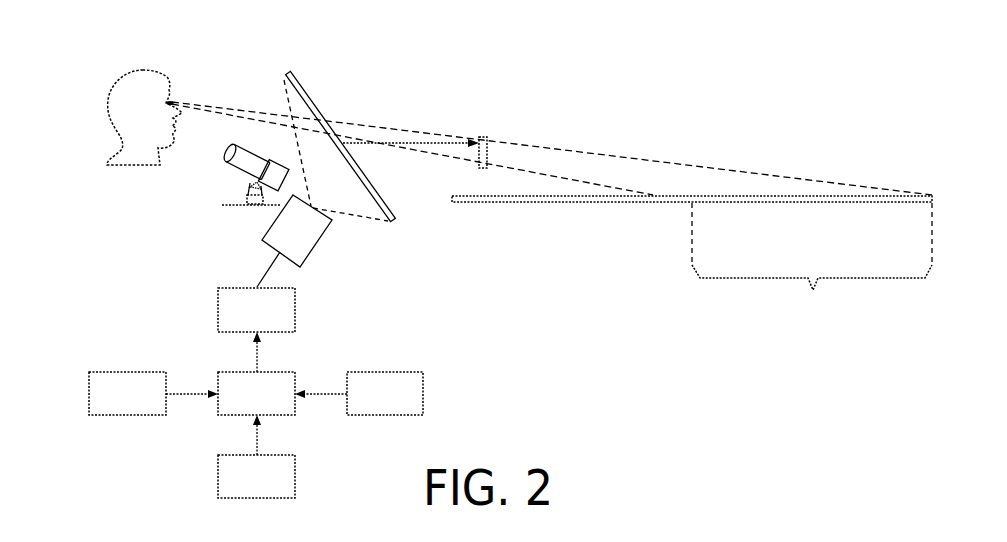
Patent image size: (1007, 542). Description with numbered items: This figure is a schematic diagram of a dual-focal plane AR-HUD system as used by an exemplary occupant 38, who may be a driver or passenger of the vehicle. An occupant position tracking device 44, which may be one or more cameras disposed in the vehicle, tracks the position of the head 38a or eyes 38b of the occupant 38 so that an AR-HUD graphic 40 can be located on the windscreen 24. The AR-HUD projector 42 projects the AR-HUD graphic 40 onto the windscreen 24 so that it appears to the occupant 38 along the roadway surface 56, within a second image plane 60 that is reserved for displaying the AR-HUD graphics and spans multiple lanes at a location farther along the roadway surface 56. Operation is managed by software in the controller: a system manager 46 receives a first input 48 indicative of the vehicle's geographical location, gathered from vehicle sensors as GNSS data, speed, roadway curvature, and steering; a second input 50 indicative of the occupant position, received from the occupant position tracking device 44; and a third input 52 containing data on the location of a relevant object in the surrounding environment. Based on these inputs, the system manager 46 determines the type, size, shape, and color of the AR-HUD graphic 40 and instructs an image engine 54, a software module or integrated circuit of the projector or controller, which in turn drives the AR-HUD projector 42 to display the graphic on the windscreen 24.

The occupant 38 is at (96, 66).
The head 38a is at (144, 70).
The eyes 38b is at (172, 100).
The windscreen 24 is at (300, 83).
The AR-HUD graphic 40 is at (483, 137).
The occupant position tracking device 44 is at (243, 190).
The AR-HUD projector 42 is at (285, 244).
The image engine 54 is at (243, 323).
The system manager 46 is at (243, 407).
The first input 48 is at (243, 491).
The second input 50 is at (371, 407).
The third input 52 is at (114, 407).
The roadway surface 56 is at (563, 203).
The second image plane 60 is at (812, 261).